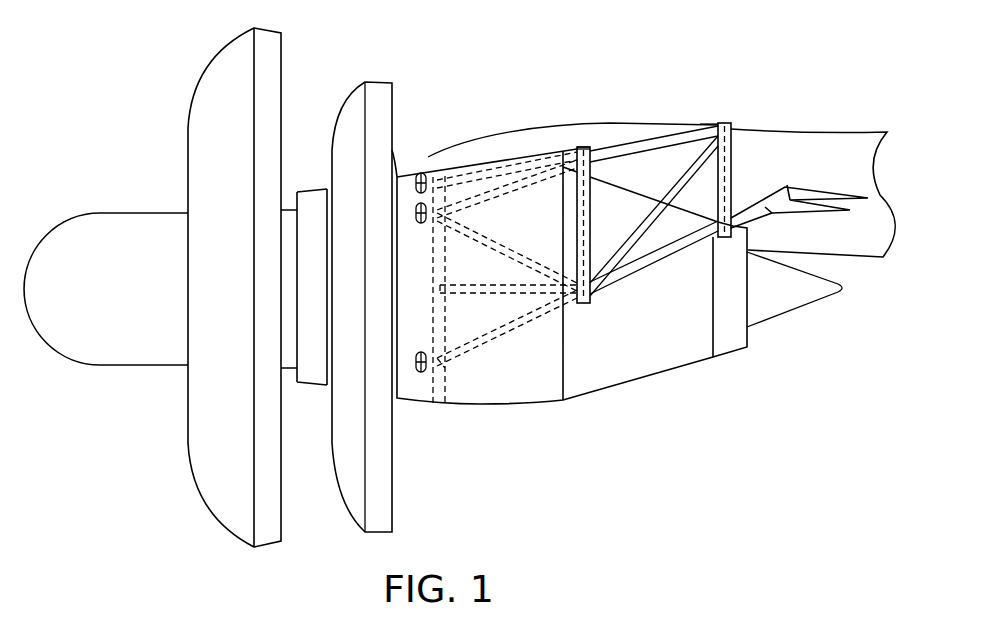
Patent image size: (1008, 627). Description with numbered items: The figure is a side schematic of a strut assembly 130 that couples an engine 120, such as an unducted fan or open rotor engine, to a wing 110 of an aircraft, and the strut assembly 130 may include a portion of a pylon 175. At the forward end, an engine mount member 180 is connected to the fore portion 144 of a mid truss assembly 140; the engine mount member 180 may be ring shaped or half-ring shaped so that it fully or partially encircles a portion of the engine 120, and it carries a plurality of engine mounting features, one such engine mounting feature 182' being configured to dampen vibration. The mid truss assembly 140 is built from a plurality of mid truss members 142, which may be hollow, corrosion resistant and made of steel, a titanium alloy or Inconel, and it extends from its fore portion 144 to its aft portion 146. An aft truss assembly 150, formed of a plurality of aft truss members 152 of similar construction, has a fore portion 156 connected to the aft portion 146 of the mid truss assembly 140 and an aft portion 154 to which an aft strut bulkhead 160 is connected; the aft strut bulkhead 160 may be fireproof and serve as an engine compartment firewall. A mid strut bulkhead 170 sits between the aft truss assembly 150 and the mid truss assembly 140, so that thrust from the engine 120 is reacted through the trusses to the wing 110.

The wing 110 is at (808, 132).
The engine 120 is at (617, 331).
The strut assembly 130 is at (573, 97).
The mid truss assembly 140 is at (487, 232).
The plurality of mid truss members 142 is at (520, 183).
The fore portion 144 is at (353, 298).
The aft portion 146 is at (574, 151).
The aft truss assembly 150 is at (654, 178).
The plurality of aft truss members 152 is at (638, 152).
The aft portion 154 is at (798, 271).
The fore portion 156 is at (600, 172).
The aft strut bulkhead 160 is at (727, 122).
The mid strut bulkhead 170 is at (578, 146).
The pylon 175 is at (715, 69).
The engine mount member 180 is at (440, 173).
The engine mounting feature 182' is at (441, 396).